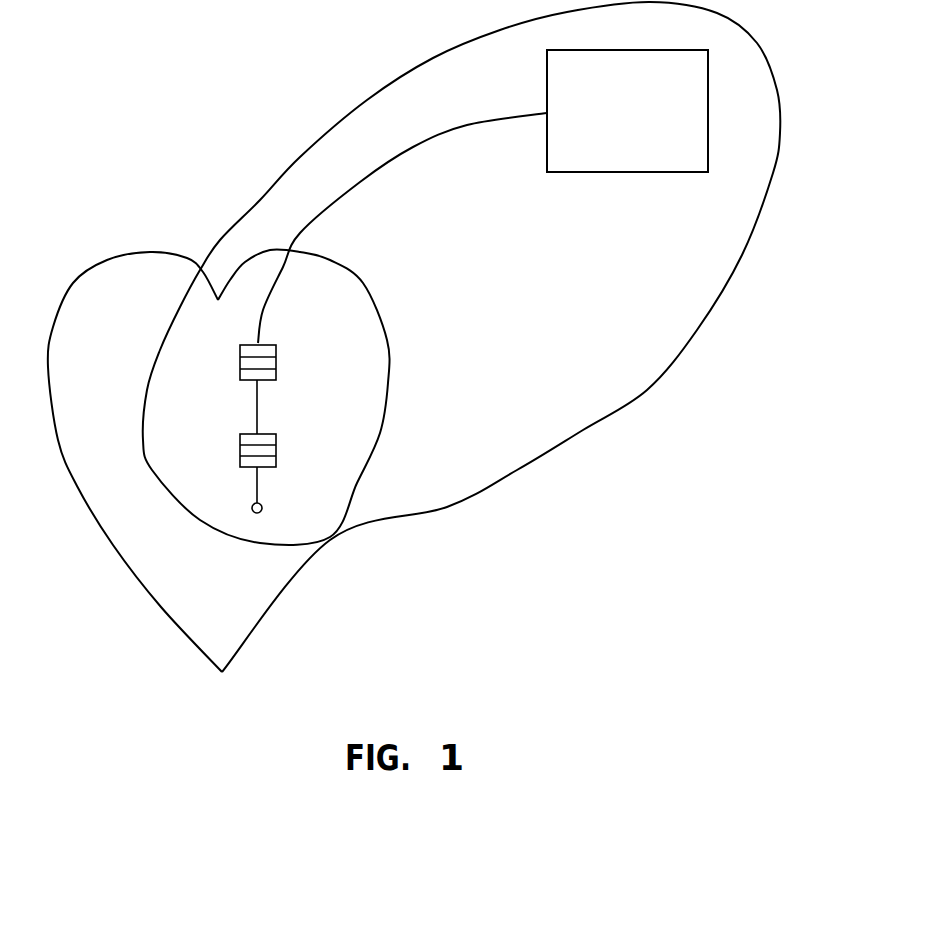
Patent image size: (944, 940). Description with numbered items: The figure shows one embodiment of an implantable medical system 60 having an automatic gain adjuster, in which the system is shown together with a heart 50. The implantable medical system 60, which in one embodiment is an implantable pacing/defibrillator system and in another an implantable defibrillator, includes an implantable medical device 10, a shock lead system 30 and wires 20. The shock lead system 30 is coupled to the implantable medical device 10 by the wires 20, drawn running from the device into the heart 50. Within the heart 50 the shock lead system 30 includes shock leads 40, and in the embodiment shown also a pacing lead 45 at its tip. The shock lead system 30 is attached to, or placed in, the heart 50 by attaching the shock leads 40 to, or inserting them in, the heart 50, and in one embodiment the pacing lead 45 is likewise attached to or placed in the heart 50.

The implantable medical device 10 is at (625, 172).
The wires 20 is at (363, 185).
The shock lead system 30 is at (250, 422).
The shock leads 40 is at (280, 374).
The pacing lead 45 is at (263, 508).
The heart 50 is at (266, 640).
The implantable medical system 60 is at (586, 433).